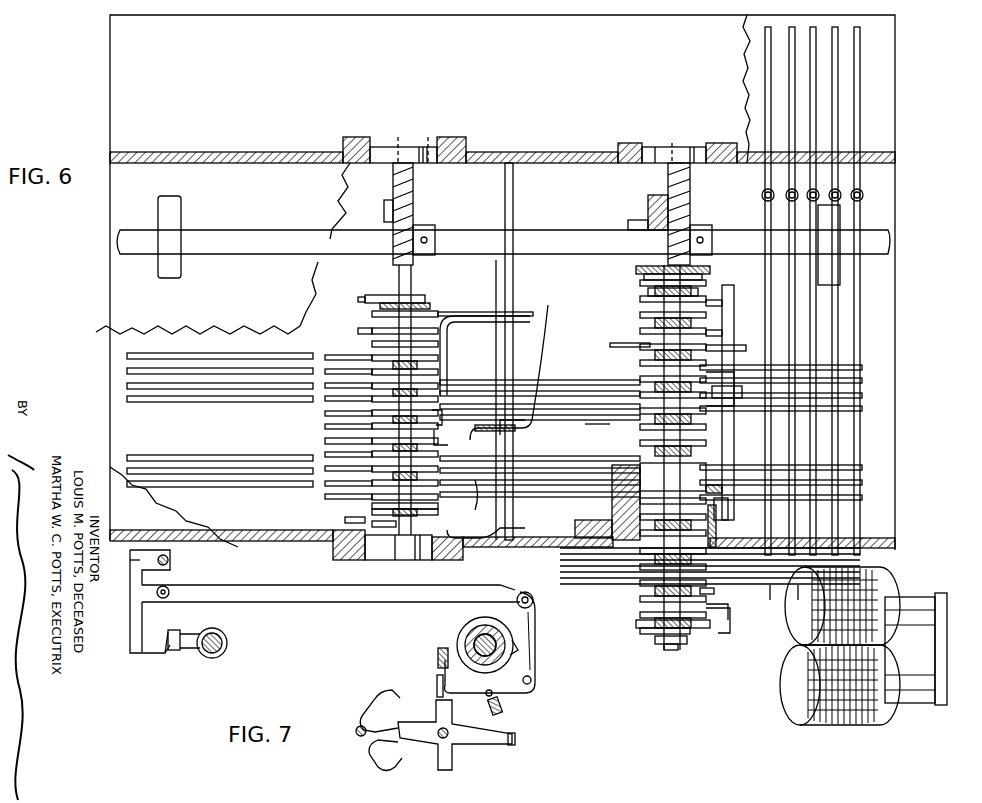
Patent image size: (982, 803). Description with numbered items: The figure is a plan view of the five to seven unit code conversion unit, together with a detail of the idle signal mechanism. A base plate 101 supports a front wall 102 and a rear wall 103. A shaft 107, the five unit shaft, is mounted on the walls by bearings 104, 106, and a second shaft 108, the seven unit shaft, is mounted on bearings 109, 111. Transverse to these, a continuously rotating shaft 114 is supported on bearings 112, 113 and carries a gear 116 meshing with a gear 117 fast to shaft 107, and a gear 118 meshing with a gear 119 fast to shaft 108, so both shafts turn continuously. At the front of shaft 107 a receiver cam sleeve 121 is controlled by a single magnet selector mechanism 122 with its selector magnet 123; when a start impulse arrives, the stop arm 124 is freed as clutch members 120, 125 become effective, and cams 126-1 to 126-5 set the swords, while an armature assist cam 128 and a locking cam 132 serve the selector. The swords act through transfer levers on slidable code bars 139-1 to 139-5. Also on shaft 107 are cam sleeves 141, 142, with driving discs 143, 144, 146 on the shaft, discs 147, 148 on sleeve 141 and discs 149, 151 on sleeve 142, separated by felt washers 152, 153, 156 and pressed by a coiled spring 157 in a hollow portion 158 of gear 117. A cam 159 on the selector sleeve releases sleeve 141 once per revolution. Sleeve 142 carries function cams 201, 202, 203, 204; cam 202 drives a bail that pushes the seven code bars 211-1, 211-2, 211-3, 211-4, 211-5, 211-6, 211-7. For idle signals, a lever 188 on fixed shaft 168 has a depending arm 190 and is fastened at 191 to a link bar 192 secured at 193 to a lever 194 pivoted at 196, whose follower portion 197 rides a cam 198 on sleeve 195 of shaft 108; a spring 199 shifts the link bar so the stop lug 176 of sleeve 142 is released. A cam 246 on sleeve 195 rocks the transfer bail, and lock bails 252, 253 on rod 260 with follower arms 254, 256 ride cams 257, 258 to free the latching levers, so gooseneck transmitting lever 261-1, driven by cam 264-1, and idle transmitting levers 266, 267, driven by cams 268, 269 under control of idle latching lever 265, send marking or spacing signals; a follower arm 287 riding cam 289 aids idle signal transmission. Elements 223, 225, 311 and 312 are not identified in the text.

In FIG. 6, the base plate 101 is at (130, 72).
In FIG. 6, the front wall 102 is at (478, 545).
In FIG. 6, the rear wall 103 is at (470, 158).
In FIG. 6, the bearing 104 is at (612, 498).
In FIG. 6, the bearing 106 is at (660, 147).
In FIG. 6, the shaft 107 is at (682, 147).
In FIG. 7, the shaft 107 is at (226, 644).
In FIG. 6, the second shaft 108 is at (410, 146).
In FIG. 7, the second shaft 108 is at (478, 670).
In FIG. 6, the bearing 109 is at (430, 560).
In FIG. 6, the bearing 111 is at (424, 150).
In FIG. 6, the bearing 112 is at (172, 205).
In FIG. 6, the bearing 113 is at (838, 232).
In FIG. 6, the continuously rotating shaft 114 is at (880, 245).
In FIG. 6, the gear 116 is at (692, 215).
In FIG. 6, the gear 117 is at (713, 240).
In FIG. 6, the gear 118 is at (414, 196).
In FIG. 6, the gear 119 is at (436, 238).
In FIG. 6, the clutch member 120 is at (612, 524).
In FIG. 6, the receiver cam sleeve 121 is at (732, 613).
In FIG. 6, the single magnet selector mechanism 122 is at (770, 590).
In FIG. 6, the selector magnet 123 is at (882, 572).
In FIG. 6, the stop arm 124 is at (722, 633).
In FIG. 6, the clutch member 125 is at (672, 650).
In FIG. 6, the cam 126-1 is at (650, 578).
In FIG. 6, the cam 126-5 is at (640, 568).
In FIG. 6, the armature assist cam 128 is at (723, 591).
In FIG. 6, the locking cam 132 is at (646, 598).
In FIG. 6, the slidable code bar 139-1 is at (798, 600).
In FIG. 6, the slidable code bar 139-5 is at (832, 540).
In FIG. 6, the cam sleeve 141 is at (735, 428).
In FIG. 6, the cam sleeve 142 is at (706, 312).
In FIG. 6, the disc 143 is at (673, 477).
In FIG. 6, the disc 144 is at (640, 420).
In FIG. 6, the disc 146 is at (636, 270).
In FIG. 6, the disc 147 is at (650, 445).
In FIG. 6, the disc 148 is at (645, 402).
In FIG. 6, the disc 149 is at (600, 418).
In FIG. 6, the disc 151 is at (648, 290).
In FIG. 6, the felt washer 152 is at (722, 495).
In FIG. 6, the felt washer 153 is at (706, 356).
In FIG. 6, the felt washer 156 is at (702, 278).
In FIG. 6, the coiled spring 157 is at (655, 208).
In FIG. 6, the hollow portion 158 is at (638, 225).
In FIG. 6, the cam 159 is at (580, 548).
In FIG. 7, the fixed shaft 168 is at (170, 556).
In FIG. 7, the bent over lug 176 is at (212, 630).
In FIG. 7, the lever 188 is at (130, 566).
In FIG. 7, the depending arm 190 is at (135, 600).
In FIG. 7, the fastening point 191 is at (170, 590).
In FIG. 6, the link bar 192 is at (285, 430).
In FIG. 7, the link bar 192 is at (302, 590).
In FIG. 7, the securing point 193 is at (532, 592).
In FIG. 6, the lever 194 is at (368, 437).
In FIG. 7, the lever 194 is at (525, 660).
In FIG. 6, the sleeve 195 is at (372, 330).
In FIG. 7, the sleeve 195 is at (465, 640).
In FIG. 7, the pivot 196 is at (532, 680).
In FIG. 7, the follower portion 197 is at (520, 645).
In FIG. 6, the cam 198 is at (405, 503).
In FIG. 7, the cam 198 is at (460, 630).
In FIG. 7, the spring 199 is at (503, 712).
In FIG. 6, the function cam 201 is at (722, 360).
In FIG. 6, the function cam 202 is at (610, 345).
In FIG. 6, the function cam 203 is at (706, 347).
In FIG. 6, the function cam 204 is at (722, 294).
In FIG. 6, the code bar 211-1 is at (152, 487).
In FIG. 6, the code bar 211-2 is at (190, 474).
In FIG. 6, the code bar 211-3 is at (236, 461).
In FIG. 6, the code bar 211-4 is at (127, 399).
In FIG. 6, the code bar 211-5 is at (127, 386).
In FIG. 6, the code bar 211-6 is at (127, 371).
In FIG. 6, the code bar 211-7 is at (127, 356).
In FIG. 6, the vertical rods 223 is at (835, 316).
In FIG. 6, the guide rings 225 is at (863, 200).
In FIG. 6, the cam 246 is at (426, 311).
In FIG. 6, the lock bail 252 is at (462, 380).
In FIG. 6, the lock bail 253 is at (448, 508).
In FIG. 6, the follower arm 254 is at (448, 340).
In FIG. 6, the follower arm 256 is at (398, 560).
In FIG. 6, the cam 257 is at (448, 360).
In FIG. 6, the cam 258 is at (370, 527).
In FIG. 6, the rod 260 is at (514, 198).
In FIG. 6, the gooseneck transmitting lever 261-1 is at (340, 492).
In FIG. 6, the cam 264-1 is at (376, 490).
In FIG. 7, the idle signal latching lever 265 is at (486, 742).
In FIG. 6, the idle transmitting lever 266 is at (368, 428).
In FIG. 6, the idle transmitting lever 267 is at (330, 455).
In FIG. 6, the cam 268 is at (392, 362).
In FIG. 6, the cam 269 is at (396, 402).
In FIG. 6, the follower arm 287 is at (370, 295).
In FIG. 6, the cam 289 is at (420, 300).
In FIG. 6, the cross lever 311 is at (444, 436).
In FIG. 7, the cross lever 311 is at (455, 735).
In FIG. 6, the pin 312 is at (454, 414).
In FIG. 7, the pin 312 is at (437, 702).